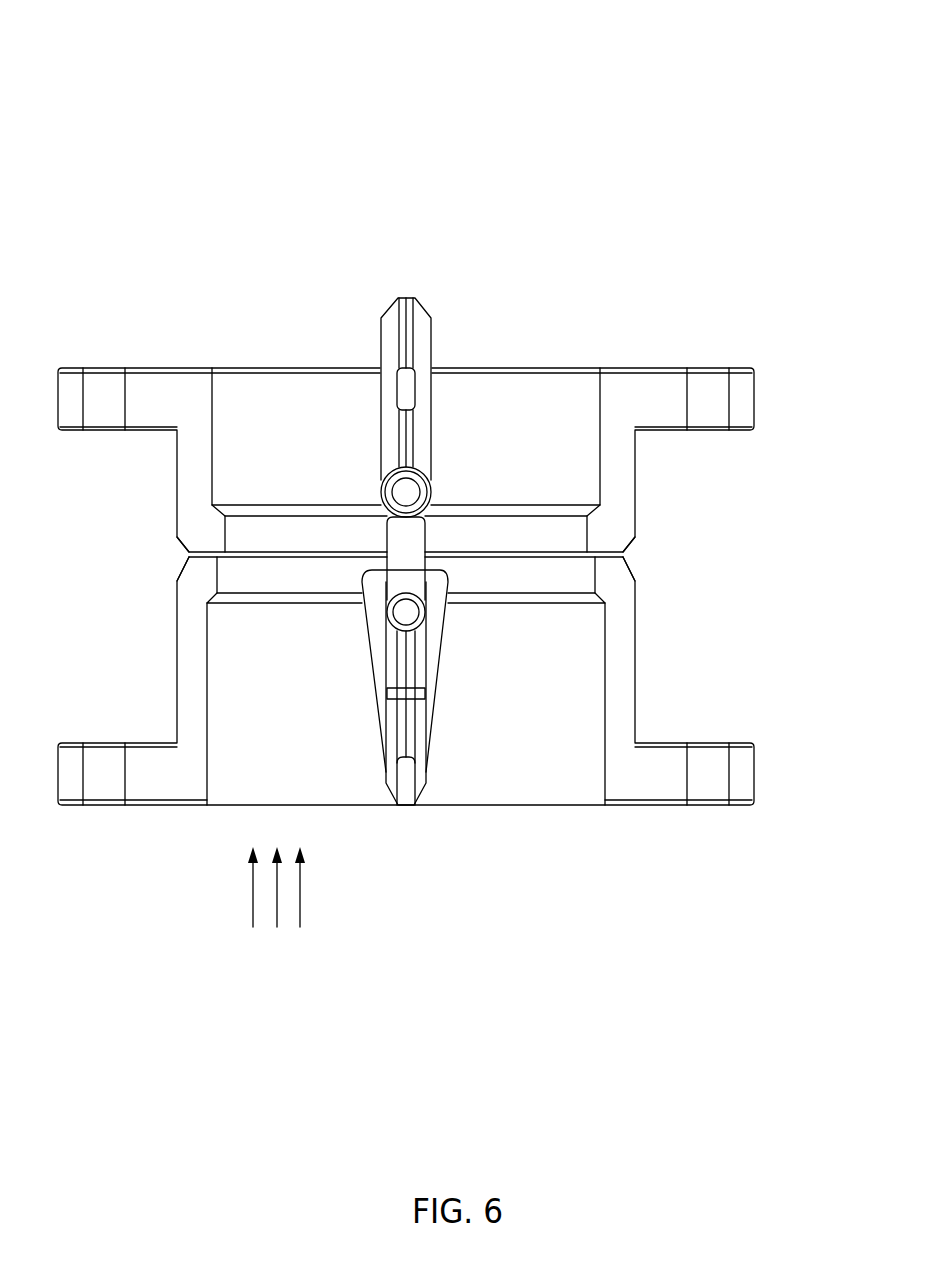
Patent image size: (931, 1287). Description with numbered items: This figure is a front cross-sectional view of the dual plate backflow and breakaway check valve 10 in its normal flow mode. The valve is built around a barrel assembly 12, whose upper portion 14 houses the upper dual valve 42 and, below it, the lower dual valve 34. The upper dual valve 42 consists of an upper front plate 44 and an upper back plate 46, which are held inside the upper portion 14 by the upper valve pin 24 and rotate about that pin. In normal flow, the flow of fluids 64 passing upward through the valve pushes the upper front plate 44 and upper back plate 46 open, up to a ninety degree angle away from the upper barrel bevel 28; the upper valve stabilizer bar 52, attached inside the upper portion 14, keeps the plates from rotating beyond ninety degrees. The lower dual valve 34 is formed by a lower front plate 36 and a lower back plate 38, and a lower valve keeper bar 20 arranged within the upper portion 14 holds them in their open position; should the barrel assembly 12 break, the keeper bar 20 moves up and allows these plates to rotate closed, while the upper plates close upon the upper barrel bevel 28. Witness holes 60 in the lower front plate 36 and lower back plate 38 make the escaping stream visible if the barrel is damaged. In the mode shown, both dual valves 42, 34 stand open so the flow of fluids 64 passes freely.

The dual plate backflow and breakaway check valve 10 is at (490, 83).
The barrel assembly 12 is at (783, 367).
The upper portion 14 is at (635, 455).
The lower valve keeper bar 20 is at (400, 543).
The upper valve pin 24 is at (403, 492).
The upper barrel bevel 28 is at (212, 508).
The lower dual valve 34 is at (449, 616).
The lower front plate 36 is at (422, 745).
The lower back plate 38 is at (387, 743).
The upper dual valve 42 is at (408, 297).
The upper front plate 44 is at (423, 398).
The upper back plate 46 is at (387, 312).
The upper valve stabilizer bar 52 is at (403, 387).
The witness holes 60 is at (392, 693).
The flow of fluids 64 is at (275, 947).